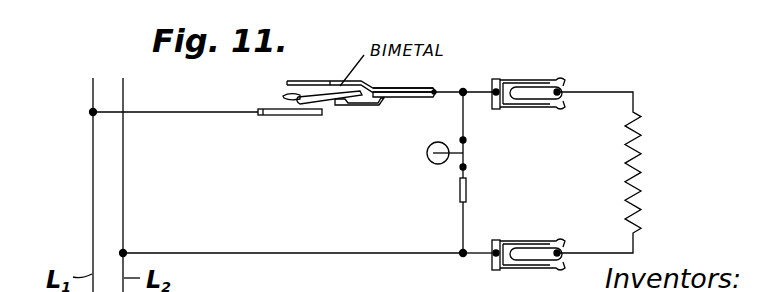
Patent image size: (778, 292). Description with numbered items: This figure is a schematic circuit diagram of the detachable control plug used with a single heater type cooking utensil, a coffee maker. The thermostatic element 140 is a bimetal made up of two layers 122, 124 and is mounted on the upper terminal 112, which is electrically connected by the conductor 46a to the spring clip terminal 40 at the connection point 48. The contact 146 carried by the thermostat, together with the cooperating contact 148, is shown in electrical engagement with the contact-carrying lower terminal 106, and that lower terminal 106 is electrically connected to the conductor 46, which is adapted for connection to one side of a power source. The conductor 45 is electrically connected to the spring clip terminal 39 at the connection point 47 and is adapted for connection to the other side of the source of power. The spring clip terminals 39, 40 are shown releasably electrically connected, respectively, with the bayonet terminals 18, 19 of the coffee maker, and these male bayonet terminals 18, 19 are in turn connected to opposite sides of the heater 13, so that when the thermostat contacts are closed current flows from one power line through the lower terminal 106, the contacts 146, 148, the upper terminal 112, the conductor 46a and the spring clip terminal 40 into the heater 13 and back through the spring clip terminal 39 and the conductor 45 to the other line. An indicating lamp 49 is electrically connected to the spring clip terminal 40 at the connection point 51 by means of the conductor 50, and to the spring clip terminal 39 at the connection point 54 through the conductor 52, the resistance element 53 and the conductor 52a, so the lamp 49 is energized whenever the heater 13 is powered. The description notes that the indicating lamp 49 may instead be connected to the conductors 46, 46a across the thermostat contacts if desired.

The heater 13 is at (643, 140).
The bayonet terminal 18 is at (535, 250).
The bayonet terminal 19 is at (542, 90).
The spring clip terminal 39 is at (525, 241).
The spring clip terminal 40 is at (510, 80).
The conductor 45 is at (216, 252).
The conductor 46 is at (163, 113).
The conductor 46a is at (461, 90).
The connection point 47 is at (493, 251).
The connection point 48 is at (494, 96).
The indicating lamp 49 is at (430, 162).
The conductor 50 is at (468, 141).
The connection point 51 is at (449, 94).
The conductor 52 is at (468, 168).
The conductor 52a is at (462, 222).
The resistance element 53 is at (468, 190).
The connection point 54 is at (463, 257).
The lower terminal 106 is at (279, 116).
The upper terminal 112 is at (302, 80).
The bimetal layer 122 is at (405, 87).
The bimetal layer 124 is at (396, 98).
The thermostatic element 140 is at (331, 84).
The contact 146 is at (325, 102).
The contact 148 is at (297, 97).